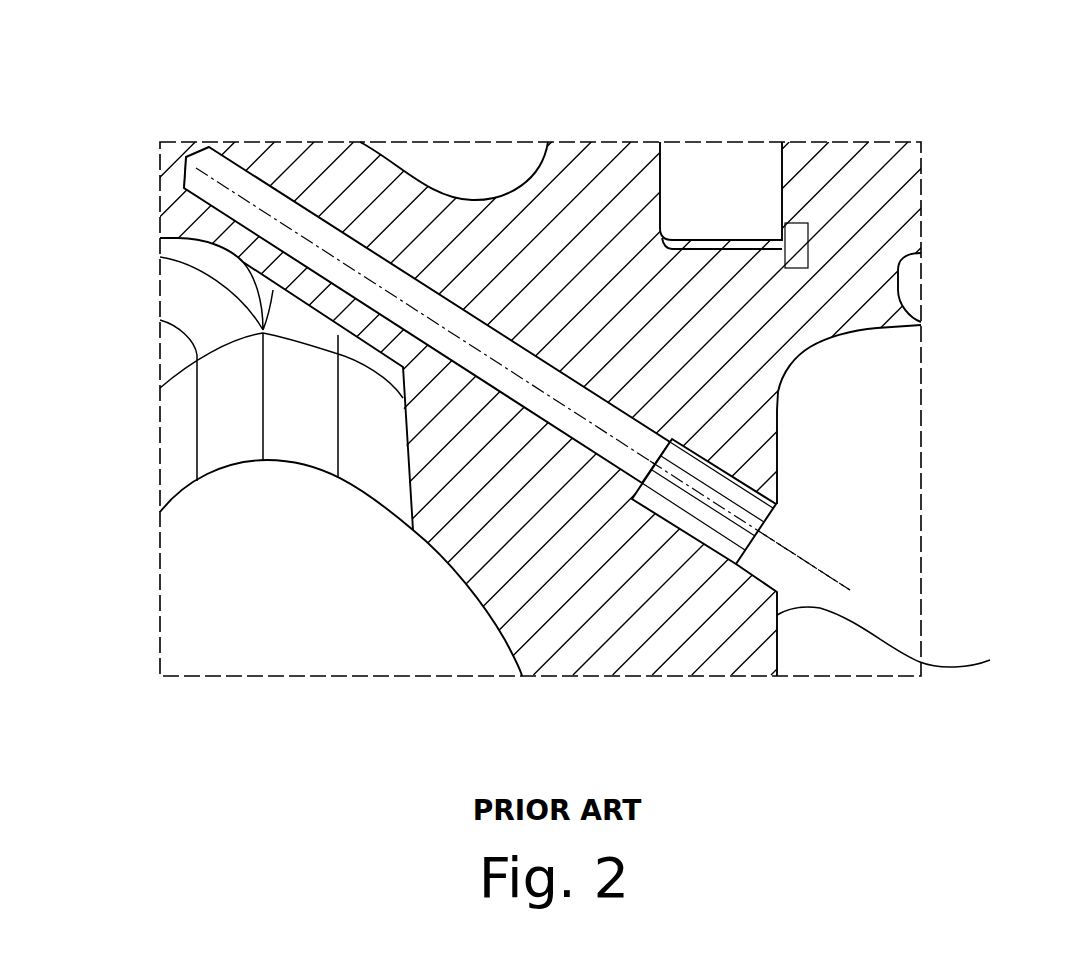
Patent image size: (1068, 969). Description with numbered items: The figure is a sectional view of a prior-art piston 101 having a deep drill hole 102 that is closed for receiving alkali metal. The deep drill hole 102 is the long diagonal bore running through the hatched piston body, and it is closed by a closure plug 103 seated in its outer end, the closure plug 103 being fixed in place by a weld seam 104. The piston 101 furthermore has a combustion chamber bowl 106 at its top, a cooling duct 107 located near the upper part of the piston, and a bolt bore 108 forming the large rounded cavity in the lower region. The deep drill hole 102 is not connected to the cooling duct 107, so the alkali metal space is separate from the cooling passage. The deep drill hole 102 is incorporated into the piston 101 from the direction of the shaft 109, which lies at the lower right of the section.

The piston 101 is at (599, 127).
The deep drill hole 102 is at (577, 378).
The closure plug 103 is at (712, 476).
The weld seam 104 is at (787, 505).
The combustion chamber bowl 106 is at (493, 189).
The cooling duct 107 is at (688, 212).
The bolt bore 108 is at (457, 612).
The shaft 109 is at (911, 642).